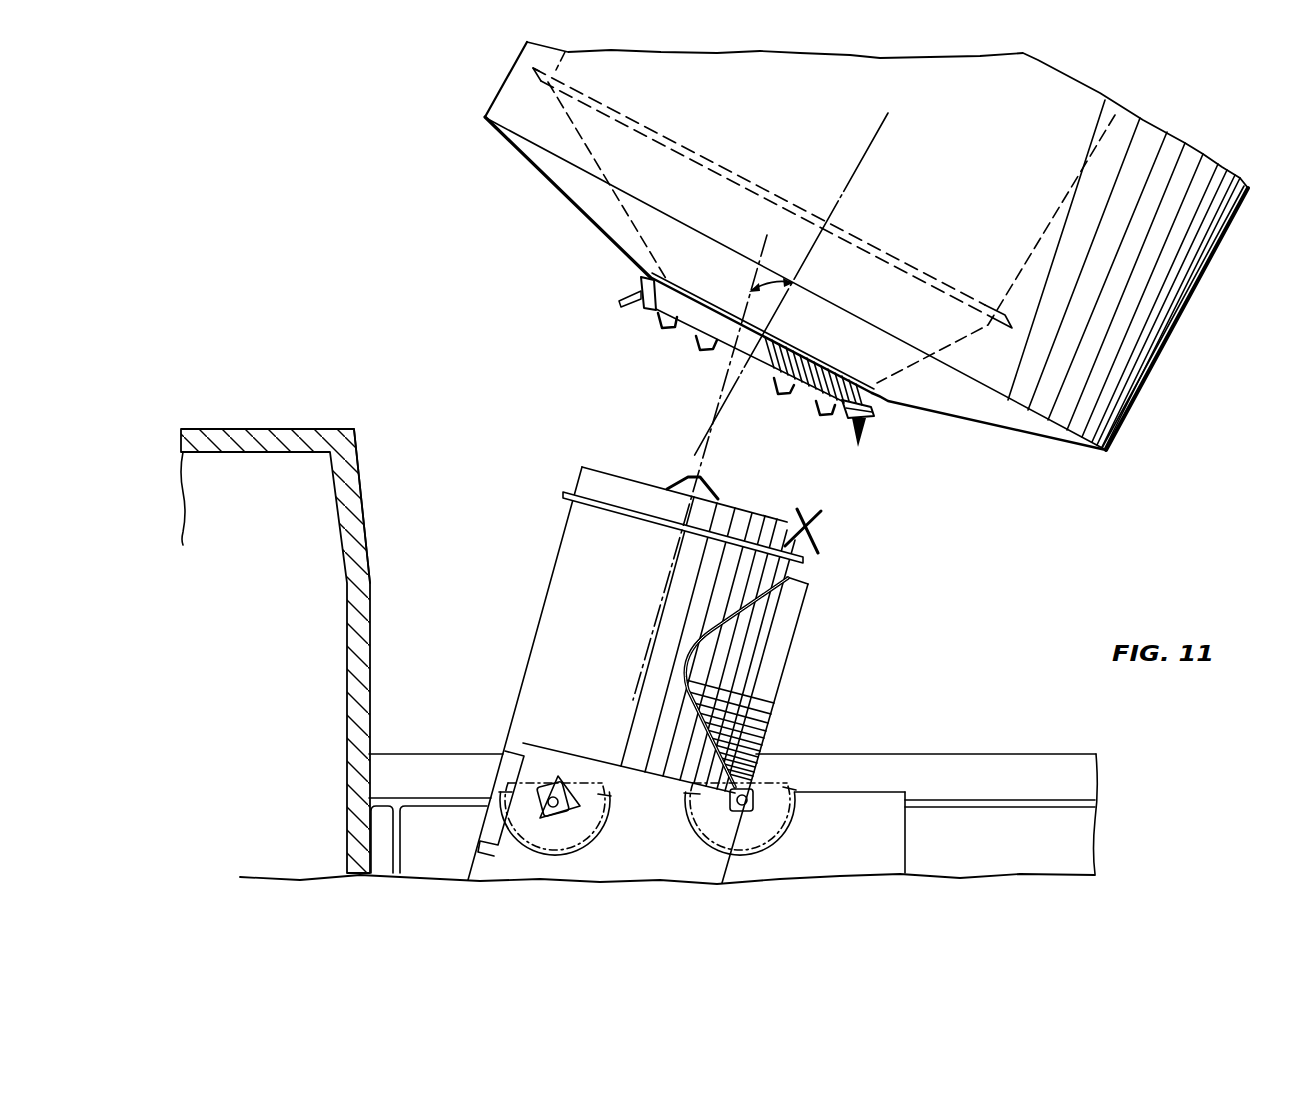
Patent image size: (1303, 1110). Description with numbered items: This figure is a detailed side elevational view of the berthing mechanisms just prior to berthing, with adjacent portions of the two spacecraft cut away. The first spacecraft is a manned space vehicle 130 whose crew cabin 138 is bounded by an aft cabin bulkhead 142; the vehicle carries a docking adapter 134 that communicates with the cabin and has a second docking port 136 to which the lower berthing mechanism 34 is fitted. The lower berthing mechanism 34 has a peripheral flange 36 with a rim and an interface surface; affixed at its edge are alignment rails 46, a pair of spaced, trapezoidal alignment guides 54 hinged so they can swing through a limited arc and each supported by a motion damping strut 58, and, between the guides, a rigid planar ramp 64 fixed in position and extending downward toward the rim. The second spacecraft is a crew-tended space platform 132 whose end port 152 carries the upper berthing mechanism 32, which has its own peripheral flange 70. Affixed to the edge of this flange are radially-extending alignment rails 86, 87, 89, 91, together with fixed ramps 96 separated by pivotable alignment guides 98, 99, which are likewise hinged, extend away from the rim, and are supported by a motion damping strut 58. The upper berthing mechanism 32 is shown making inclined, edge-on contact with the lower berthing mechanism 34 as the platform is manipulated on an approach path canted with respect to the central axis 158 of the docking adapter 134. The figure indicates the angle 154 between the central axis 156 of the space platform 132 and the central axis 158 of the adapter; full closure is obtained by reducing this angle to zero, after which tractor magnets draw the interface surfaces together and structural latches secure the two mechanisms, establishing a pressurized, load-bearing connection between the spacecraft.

The upper berthing mechanism 32 is at (588, 307).
The lower berthing mechanism 34 is at (640, 464).
The peripheral flange 36 is at (652, 490).
The alignment rails 46 is at (712, 496).
The alignment guides 54 is at (800, 512).
The motion damping strut 58 is at (625, 292).
The ramp 64 is at (814, 547).
The peripheral flange 70 is at (710, 313).
The alignment rail 86 is at (700, 352).
The alignment rail 87 is at (777, 390).
The alignment rail 89 is at (662, 332).
The alignment rail 91 is at (817, 408).
The fixed ramp 96 is at (850, 418).
The alignment guide 98 is at (856, 441).
The alignment guide 99 is at (623, 314).
The space vehicle 130 is at (276, 429).
The space platform 132 is at (1130, 410).
The docking adapter 134 is at (540, 622).
The second docking port 136 is at (563, 494).
The crew cabin 138 is at (268, 531).
The aft cabin bulkhead 142 is at (362, 495).
The port 152 is at (640, 278).
The angle 154 is at (789, 283).
The central axis 156 is at (846, 190).
The central axis 158 is at (665, 595).